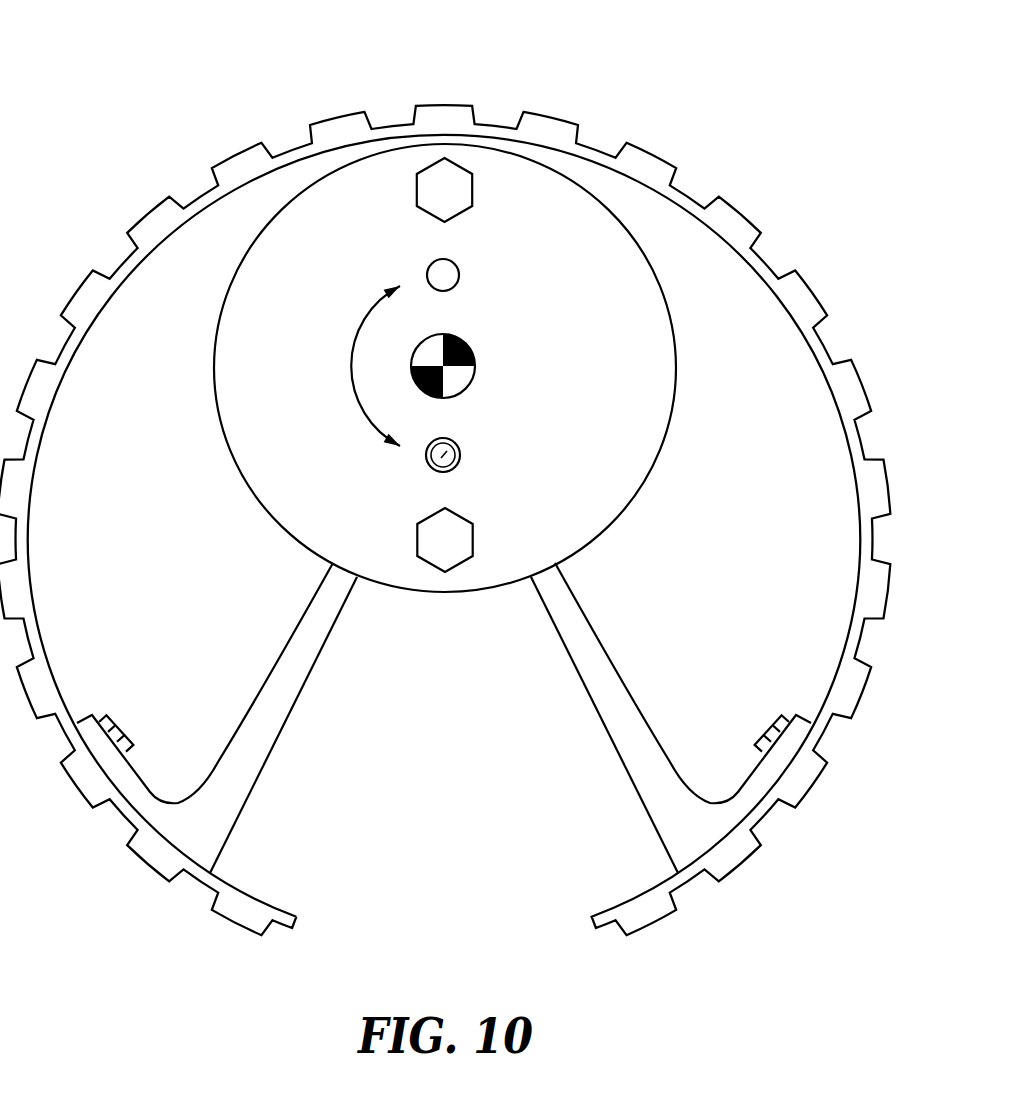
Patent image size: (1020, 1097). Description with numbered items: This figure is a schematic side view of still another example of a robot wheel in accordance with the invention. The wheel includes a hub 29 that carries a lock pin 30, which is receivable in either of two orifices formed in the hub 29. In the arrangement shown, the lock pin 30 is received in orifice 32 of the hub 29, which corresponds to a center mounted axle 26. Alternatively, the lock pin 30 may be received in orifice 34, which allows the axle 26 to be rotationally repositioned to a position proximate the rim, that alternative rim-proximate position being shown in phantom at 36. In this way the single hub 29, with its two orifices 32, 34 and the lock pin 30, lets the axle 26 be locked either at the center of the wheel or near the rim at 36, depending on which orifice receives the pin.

The hub 29 is at (628, 392).
The rim position of axle 36 is at (474, 194).
The orifice 34 is at (459, 275).
The lock pin 30 is at (460, 449).
The orifice 32 is at (429, 465).
The axle 26 is at (447, 543).